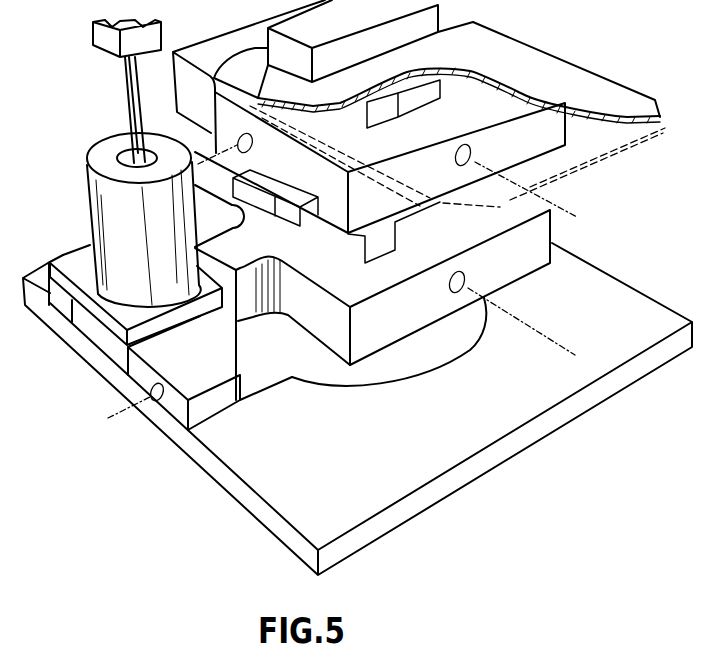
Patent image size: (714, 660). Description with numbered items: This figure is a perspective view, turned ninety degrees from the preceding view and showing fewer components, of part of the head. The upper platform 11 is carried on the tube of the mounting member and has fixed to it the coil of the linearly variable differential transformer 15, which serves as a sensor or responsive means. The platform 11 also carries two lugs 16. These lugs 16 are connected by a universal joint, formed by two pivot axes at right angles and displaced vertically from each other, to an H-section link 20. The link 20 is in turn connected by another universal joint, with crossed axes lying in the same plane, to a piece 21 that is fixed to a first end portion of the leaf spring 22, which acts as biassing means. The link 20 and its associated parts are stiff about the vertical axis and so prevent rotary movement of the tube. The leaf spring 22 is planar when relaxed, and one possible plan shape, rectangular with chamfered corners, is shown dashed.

The upper platform 11 is at (607, 328).
The linearly variable differential transformer (LVDT) 15 is at (113, 208).
The lugs 16 is at (217, 400).
The H-section link 20 is at (437, 213).
The piece 21 is at (350, 116).
The leaf spring 22 is at (585, 84).